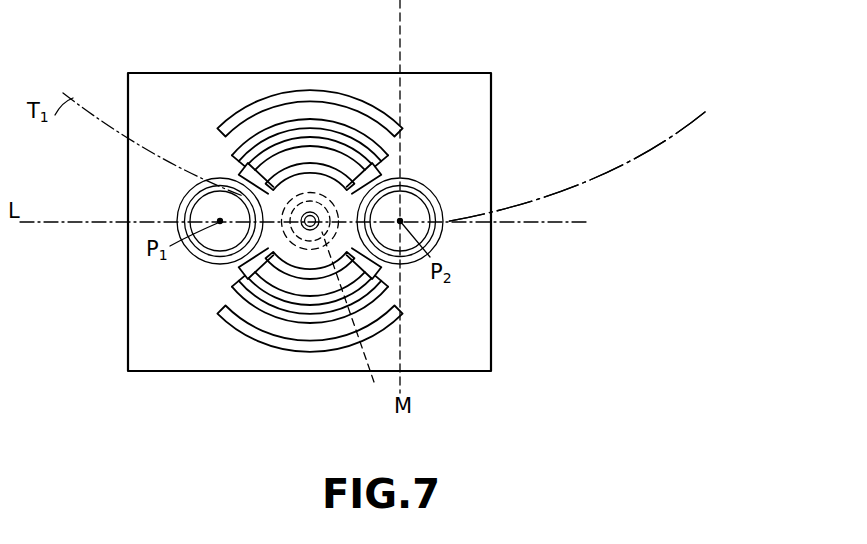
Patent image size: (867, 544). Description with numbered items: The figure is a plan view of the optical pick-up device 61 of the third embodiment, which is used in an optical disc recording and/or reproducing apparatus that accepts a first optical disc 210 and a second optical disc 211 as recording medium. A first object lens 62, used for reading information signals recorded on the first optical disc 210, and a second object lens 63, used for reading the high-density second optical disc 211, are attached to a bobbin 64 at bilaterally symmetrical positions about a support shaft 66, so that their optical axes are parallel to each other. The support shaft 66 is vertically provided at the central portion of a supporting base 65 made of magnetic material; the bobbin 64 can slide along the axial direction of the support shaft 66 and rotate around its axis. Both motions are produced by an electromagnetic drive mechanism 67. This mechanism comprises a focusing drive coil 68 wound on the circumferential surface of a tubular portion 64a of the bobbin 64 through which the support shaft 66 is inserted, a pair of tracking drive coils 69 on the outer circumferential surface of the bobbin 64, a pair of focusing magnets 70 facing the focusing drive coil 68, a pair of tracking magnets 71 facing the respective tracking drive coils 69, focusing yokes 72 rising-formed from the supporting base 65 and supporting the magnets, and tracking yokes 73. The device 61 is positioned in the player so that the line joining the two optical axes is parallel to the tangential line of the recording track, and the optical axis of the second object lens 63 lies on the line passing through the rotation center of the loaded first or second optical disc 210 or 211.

The optical pick-up device 61 is at (533, 109).
The first object lens 62 is at (179, 208).
The second object lens 63 is at (431, 197).
The bobbin 64 is at (418, 207).
The tubular portion 64a is at (401, 323).
The supporting base (substrate) 65 is at (476, 251).
The support shaft 66 is at (318, 215).
The electromagnetic drive mechanism 67 is at (335, 365).
The focusing drive coil 68 is at (355, 319).
The tracking drive coil 69 is at (242, 165).
The focusing magnet 70 is at (258, 116).
The tracking magnet 71 is at (265, 122).
The focusing yoke 72 is at (312, 158).
The tracking yoke 73 is at (315, 91).
The first optical disc 210 is at (609, 168).
The second optical disc 211 is at (575, 167).